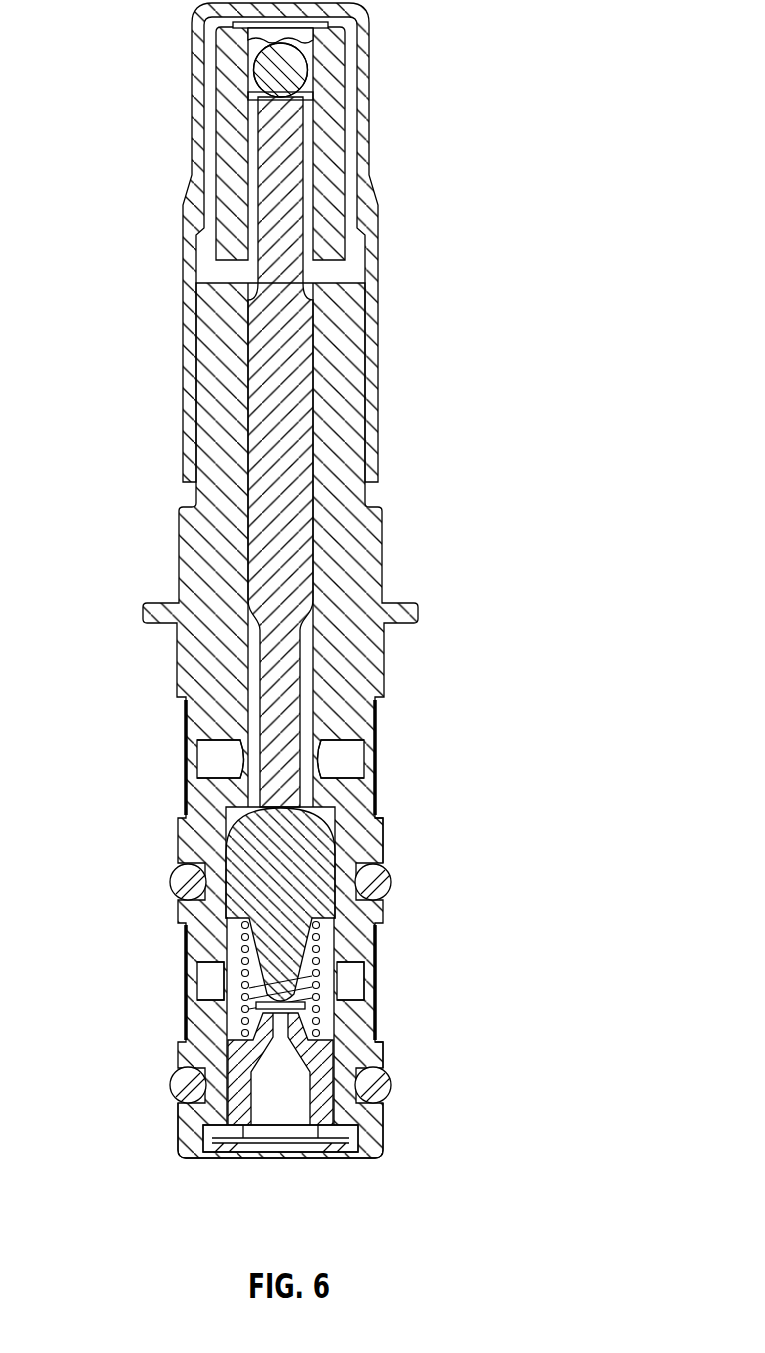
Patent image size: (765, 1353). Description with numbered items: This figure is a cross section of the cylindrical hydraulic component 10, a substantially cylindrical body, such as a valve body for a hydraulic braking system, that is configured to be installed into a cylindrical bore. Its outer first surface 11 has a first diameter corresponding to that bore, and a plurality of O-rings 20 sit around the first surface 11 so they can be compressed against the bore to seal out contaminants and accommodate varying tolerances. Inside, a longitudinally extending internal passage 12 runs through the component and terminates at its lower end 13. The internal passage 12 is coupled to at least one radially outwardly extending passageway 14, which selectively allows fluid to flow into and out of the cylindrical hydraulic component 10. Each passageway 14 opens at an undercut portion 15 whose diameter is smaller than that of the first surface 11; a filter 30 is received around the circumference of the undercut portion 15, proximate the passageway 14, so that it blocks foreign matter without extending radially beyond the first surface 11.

The cylindrical hydraulic component 10 is at (307, 617).
The first surface 11 is at (180, 556).
The internal passage 12 is at (253, 658).
The lower end 13 is at (236, 1160).
The passageway 14 is at (210, 752).
The undercut portion 15 is at (378, 816).
The O-rings 20 is at (186, 882).
The filter 30 is at (378, 713).